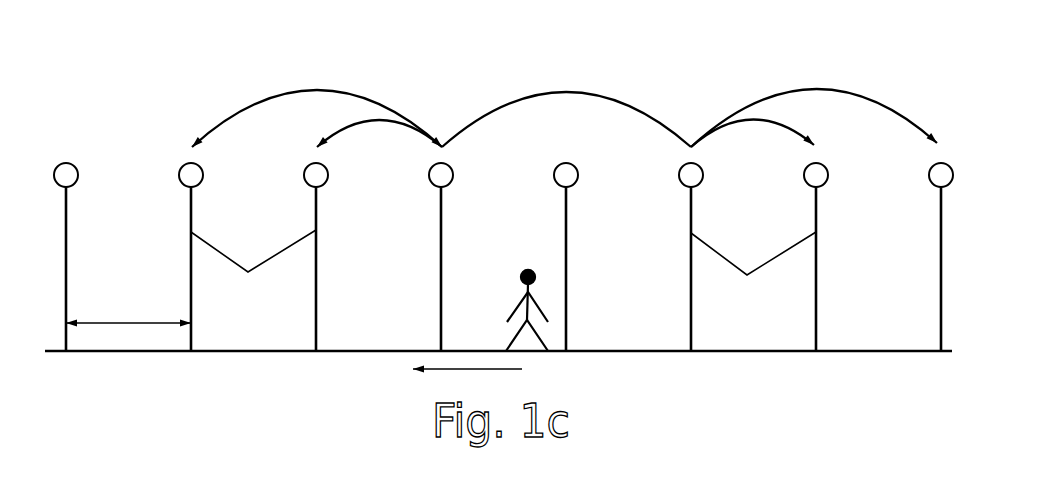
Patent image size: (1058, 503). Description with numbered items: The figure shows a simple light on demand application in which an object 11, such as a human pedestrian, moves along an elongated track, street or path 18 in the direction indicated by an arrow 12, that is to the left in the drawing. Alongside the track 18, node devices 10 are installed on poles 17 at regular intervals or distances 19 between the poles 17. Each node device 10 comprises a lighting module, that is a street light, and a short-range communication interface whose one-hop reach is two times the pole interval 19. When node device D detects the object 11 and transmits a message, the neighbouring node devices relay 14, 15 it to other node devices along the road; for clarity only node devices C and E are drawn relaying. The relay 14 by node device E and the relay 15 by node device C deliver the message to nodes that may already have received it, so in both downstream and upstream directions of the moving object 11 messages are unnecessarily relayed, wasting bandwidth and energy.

The node device 10 is at (180, 183).
The object 11 is at (546, 336).
The arrow 12 is at (461, 363).
The relay 14 is at (482, 103).
The relay 15 is at (735, 115).
The pole 17 is at (503, 269).
The track 18 is at (735, 351).
The distance 19 is at (133, 322).